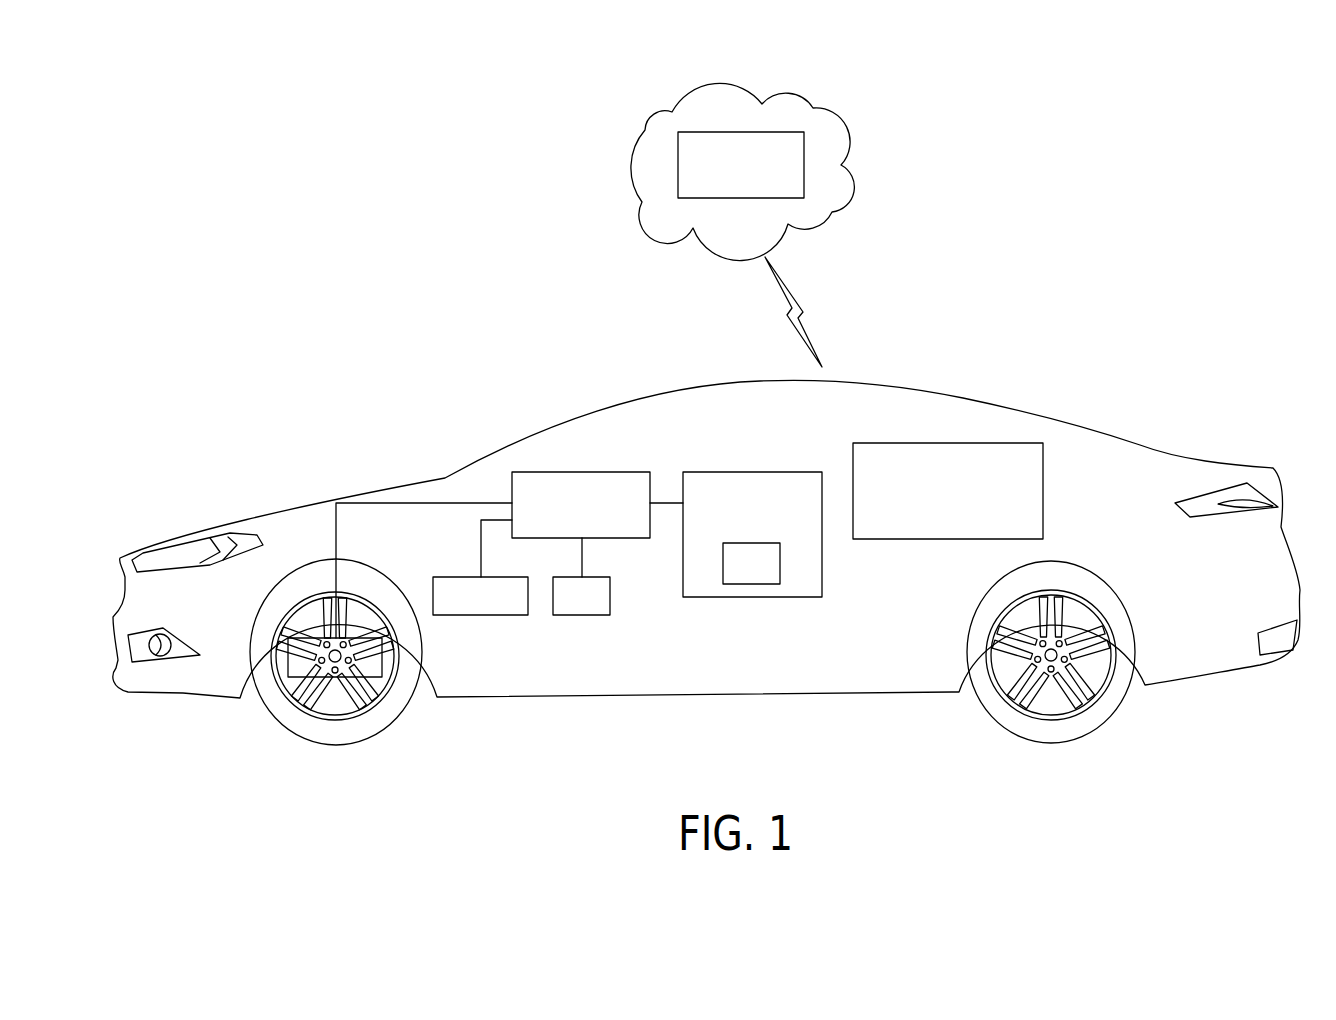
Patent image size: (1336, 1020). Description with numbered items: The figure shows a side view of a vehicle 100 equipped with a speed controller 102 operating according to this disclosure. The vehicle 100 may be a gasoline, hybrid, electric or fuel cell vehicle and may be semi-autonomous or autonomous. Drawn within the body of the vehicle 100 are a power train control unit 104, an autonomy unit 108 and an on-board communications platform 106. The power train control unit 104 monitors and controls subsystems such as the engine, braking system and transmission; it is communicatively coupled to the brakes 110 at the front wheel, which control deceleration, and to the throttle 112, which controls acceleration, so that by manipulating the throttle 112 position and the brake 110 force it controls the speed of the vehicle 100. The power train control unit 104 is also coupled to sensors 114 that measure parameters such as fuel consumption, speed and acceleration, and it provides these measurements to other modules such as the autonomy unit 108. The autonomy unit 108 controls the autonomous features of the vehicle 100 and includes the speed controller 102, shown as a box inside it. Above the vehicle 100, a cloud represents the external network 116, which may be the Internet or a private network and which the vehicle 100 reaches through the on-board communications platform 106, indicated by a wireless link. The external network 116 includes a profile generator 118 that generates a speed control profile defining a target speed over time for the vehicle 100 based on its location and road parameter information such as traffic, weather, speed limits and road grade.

The vehicle 100 is at (1127, 441).
The speed controller 102 is at (770, 574).
The power train control unit 104 is at (603, 472).
The on-board communications platform 106 is at (948, 443).
The autonomy unit 108 is at (748, 472).
The brakes 110 is at (393, 668).
The throttle 112 is at (481, 615).
The sensors 114 is at (600, 609).
The external network 116 is at (853, 188).
The profile generator 118 is at (680, 118).